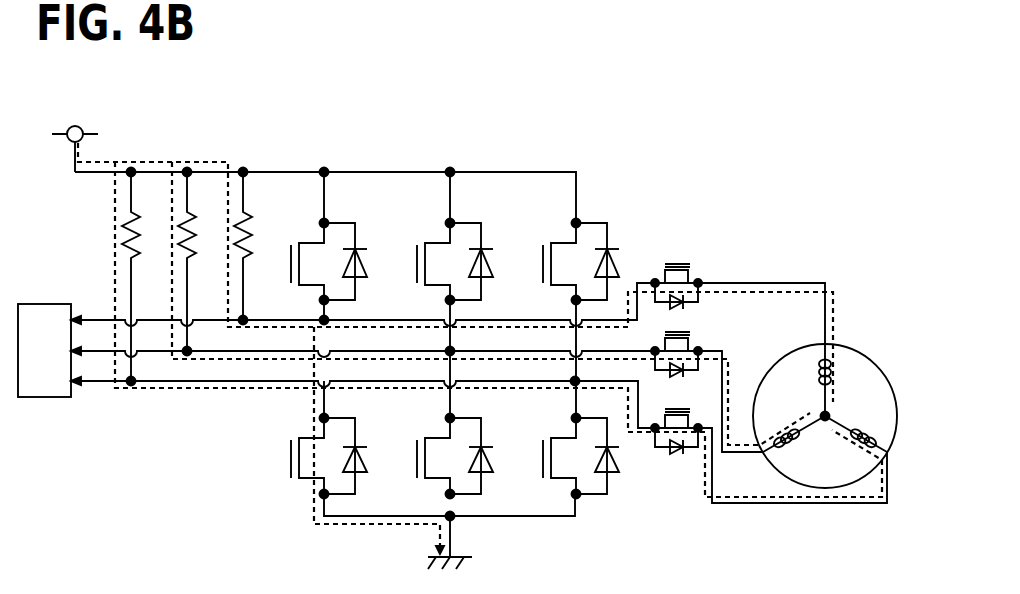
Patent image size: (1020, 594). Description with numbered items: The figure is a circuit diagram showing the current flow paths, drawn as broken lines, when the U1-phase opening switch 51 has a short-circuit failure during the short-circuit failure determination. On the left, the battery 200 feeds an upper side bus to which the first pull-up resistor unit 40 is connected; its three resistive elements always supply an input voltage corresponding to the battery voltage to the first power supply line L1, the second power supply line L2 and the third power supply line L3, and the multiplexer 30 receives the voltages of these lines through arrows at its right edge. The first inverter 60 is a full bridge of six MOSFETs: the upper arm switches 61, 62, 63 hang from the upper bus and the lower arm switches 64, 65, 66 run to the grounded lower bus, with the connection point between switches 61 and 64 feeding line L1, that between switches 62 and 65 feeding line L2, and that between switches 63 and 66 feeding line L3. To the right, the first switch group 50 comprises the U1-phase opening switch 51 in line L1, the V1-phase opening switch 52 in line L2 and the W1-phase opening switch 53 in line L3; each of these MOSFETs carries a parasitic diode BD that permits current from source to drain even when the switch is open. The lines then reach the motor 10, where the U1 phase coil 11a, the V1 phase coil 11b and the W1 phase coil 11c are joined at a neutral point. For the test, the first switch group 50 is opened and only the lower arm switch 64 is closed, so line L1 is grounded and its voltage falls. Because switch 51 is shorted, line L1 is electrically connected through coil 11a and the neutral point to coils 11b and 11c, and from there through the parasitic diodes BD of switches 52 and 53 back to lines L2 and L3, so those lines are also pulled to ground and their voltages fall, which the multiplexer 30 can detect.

The battery 200 is at (76, 125).
The first pull-up resistor unit 40 is at (208, 150).
The first inverter 60 is at (518, 150).
The upper arm switch 61 is at (318, 243).
The upper arm switch 62 is at (444, 243).
The upper arm switch 63 is at (570, 243).
The lower arm switch 64 is at (318, 438).
The lower arm switch 65 is at (444, 438).
The lower arm switch 66 is at (570, 438).
The multiplexer 30 is at (62, 304).
The first power supply line L1 is at (103, 319).
The second power supply line L2 is at (103, 351).
The third power supply line L3 is at (100, 383).
The first switch group 50 is at (742, 278).
The U1-phase opening switch 51 is at (690, 270).
The V1-phase opening switch 52 is at (690, 338).
The W1-phase opening switch 53 is at (688, 415).
The parasitic diode BD is at (686, 372).
The motor 10 is at (800, 346).
The U1 phase coil 11a is at (830, 370).
The V1 phase coil 11b is at (780, 448).
The W1 phase coil 11c is at (880, 440).